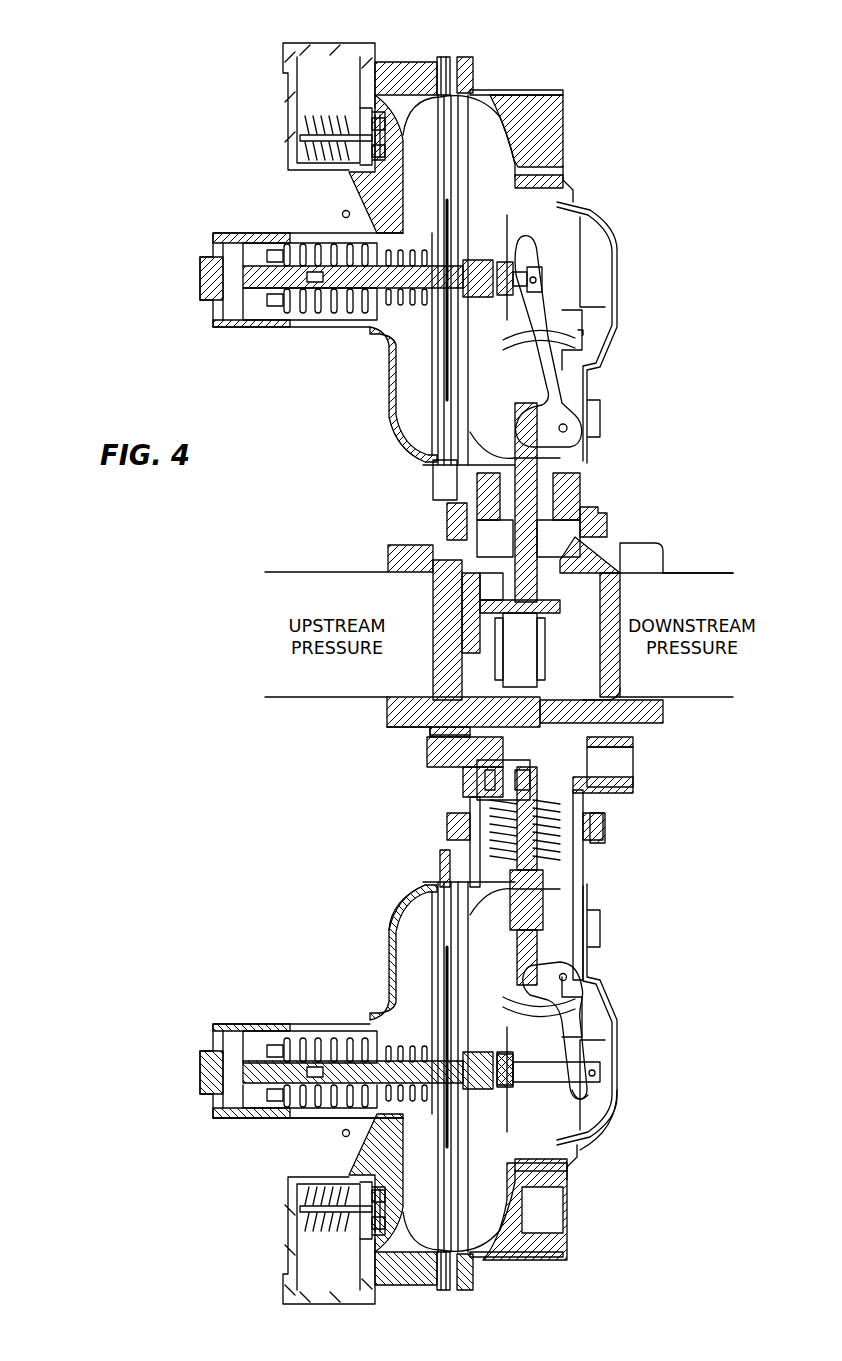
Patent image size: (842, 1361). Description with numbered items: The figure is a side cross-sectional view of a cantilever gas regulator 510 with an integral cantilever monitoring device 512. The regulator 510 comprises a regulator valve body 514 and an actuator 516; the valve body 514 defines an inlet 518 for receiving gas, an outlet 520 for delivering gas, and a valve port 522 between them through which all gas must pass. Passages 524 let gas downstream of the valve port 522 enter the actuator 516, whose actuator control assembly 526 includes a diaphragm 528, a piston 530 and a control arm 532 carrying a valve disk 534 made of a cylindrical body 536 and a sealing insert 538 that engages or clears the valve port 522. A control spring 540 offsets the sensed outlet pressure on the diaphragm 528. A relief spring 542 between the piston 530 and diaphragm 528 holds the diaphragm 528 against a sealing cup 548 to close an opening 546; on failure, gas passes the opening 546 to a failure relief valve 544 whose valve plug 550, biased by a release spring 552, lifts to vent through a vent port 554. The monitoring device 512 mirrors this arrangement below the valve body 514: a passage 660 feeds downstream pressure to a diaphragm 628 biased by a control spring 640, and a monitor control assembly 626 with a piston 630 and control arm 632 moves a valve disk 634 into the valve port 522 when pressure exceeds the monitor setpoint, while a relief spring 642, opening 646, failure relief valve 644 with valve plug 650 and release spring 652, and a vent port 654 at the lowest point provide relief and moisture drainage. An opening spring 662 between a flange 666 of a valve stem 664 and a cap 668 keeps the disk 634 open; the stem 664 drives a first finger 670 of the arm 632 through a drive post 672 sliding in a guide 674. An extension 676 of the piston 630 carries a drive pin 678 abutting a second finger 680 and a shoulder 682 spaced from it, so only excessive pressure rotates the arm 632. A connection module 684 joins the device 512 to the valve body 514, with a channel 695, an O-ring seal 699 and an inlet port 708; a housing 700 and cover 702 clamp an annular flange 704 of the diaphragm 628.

The cantilever gas regulator 510 is at (731, 98).
The cantilever monitoring device 512 is at (232, 990).
The regulator valve body 514 is at (669, 524).
The actuator 516 is at (608, 103).
The inlet 518 is at (388, 697).
The outlet 520 is at (662, 570).
The valve port 522 is at (527, 643).
The passages 524 is at (575, 455).
The actuator control assembly 526 is at (488, 238).
The diaphragm 528 is at (440, 402).
The piston 530 is at (347, 288).
The control arm 532 is at (560, 395).
The valve disk 534 is at (608, 522).
The cylindrical body 536 is at (452, 516).
The sealing insert 538 is at (388, 544).
The control spring 540 is at (283, 300).
The relief spring 542 is at (398, 232).
The failure relief valve 544 is at (328, 106).
The opening 546 is at (395, 304).
The sealing cup 548 is at (520, 142).
The valve plug 550 is at (378, 100).
The release spring 552 is at (362, 116).
The vent port 554 is at (335, 44).
The monitor control assembly 626 is at (487, 1126).
The diaphragm 628 is at (440, 1208).
The piston 630 is at (345, 1062).
The control arm 632 is at (572, 1050).
The valve disk 634 is at (476, 757).
The control spring 640 is at (322, 1042).
The relief spring 642 is at (345, 1128).
The failure relief valve 644 is at (322, 1242).
The opening 646 is at (396, 1048).
The valve plug 650 is at (487, 1262).
The release spring 652 is at (336, 1222).
The vent port 654 is at (312, 1306).
The passage 660 is at (661, 716).
The opening spring 662 is at (458, 828).
The valve stem 664 is at (562, 855).
The flange 666 is at (470, 856).
The cap 668 is at (500, 805).
The first finger 670 is at (553, 975).
The drive post 672 is at (567, 927).
The guide 674 is at (573, 898).
The extension 676 is at (618, 1128).
The drive pin 678 is at (601, 1076).
The second finger 680 is at (589, 1102).
The shoulder 682 is at (508, 1082).
The monitoring device connection module 684 is at (500, 771).
The channel 695 is at (616, 742).
The O-ring seal 699 is at (440, 726).
The housing 700 is at (611, 1012).
The cover 702 is at (388, 940).
The annular flange 704 is at (468, 1273).
The inlet port 708 is at (630, 766).